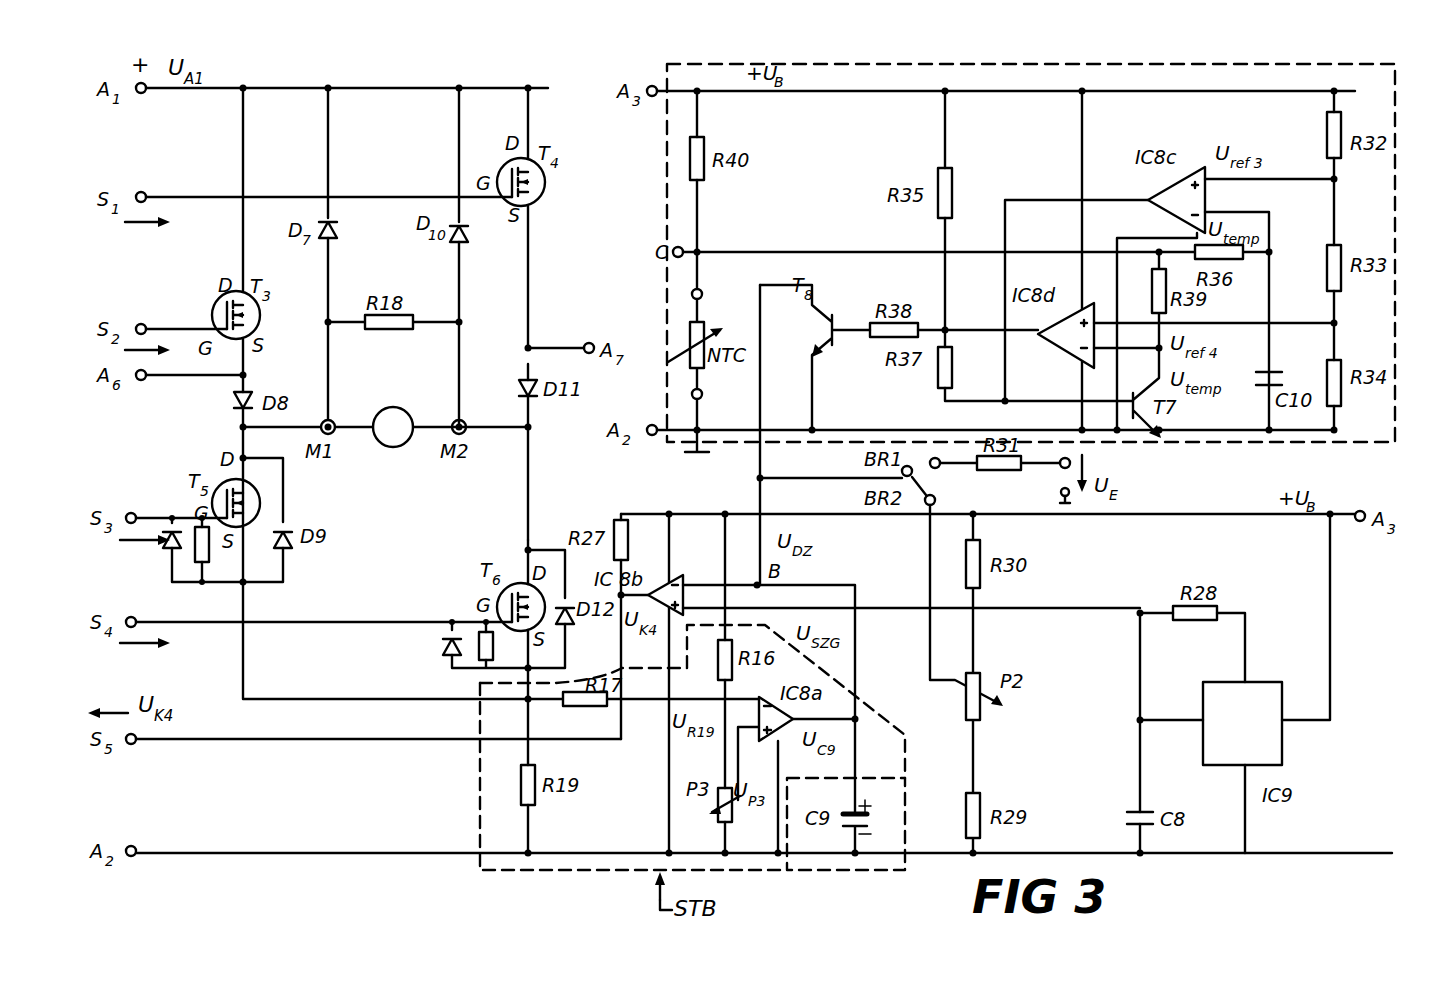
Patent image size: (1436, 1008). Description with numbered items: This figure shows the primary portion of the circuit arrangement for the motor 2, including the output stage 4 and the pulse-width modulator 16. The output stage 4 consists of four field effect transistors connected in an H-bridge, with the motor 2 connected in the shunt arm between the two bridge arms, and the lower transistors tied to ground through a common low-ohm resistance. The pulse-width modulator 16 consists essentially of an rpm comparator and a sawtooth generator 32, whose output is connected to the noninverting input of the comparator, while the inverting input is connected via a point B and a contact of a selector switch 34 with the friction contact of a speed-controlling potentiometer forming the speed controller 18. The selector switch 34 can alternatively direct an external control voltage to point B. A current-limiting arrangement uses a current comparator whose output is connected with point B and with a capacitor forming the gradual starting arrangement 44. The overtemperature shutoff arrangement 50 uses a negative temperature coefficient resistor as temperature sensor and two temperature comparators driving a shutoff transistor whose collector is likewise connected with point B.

The motor 2 is at (389, 452).
The output stage 4 is at (548, 130).
The pulse-width modulator 16 is at (688, 568).
The speed controller 18 is at (960, 702).
The sawtooth generator 32 is at (1283, 745).
The selector switch 34 is at (915, 480).
The gradual starting arrangement 44 is at (813, 872).
The overtemperature shutoff arrangement 50 is at (666, 182).